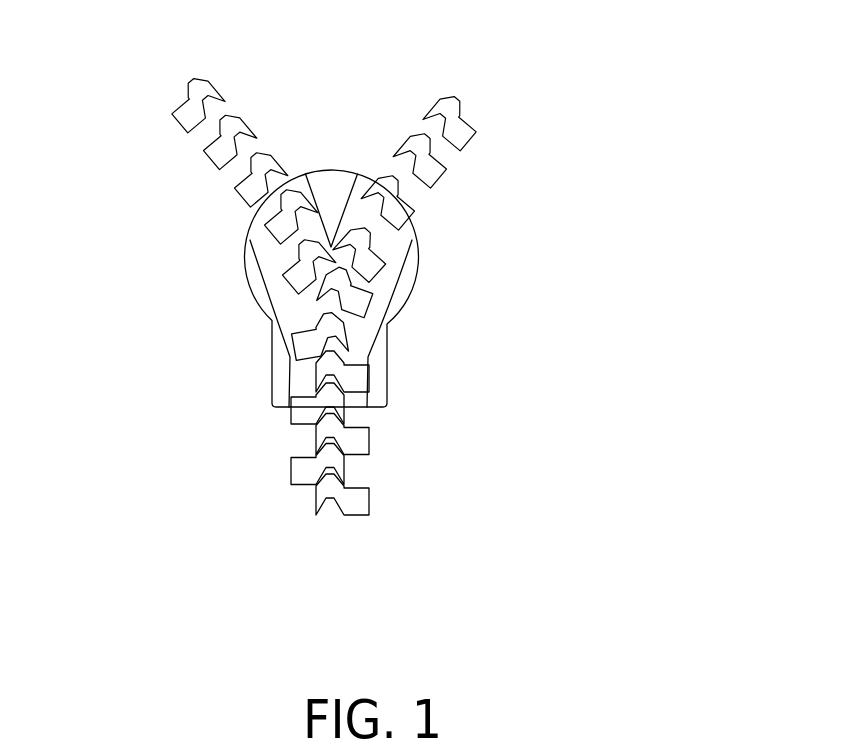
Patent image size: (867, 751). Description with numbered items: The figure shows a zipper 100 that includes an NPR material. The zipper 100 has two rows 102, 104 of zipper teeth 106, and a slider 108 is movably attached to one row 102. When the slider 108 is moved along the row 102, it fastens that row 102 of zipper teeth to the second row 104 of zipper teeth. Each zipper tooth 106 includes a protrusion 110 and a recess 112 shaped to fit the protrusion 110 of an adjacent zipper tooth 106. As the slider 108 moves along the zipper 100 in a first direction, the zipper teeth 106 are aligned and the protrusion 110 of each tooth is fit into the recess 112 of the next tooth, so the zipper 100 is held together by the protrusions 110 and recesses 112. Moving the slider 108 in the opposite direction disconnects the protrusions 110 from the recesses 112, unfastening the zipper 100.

The zipper 100 is at (597, 268).
The row of zipper teeth 102 is at (490, 100).
The second row of zipper teeth 104 is at (157, 75).
The zipper teeth 106 is at (173, 106).
The slider 108 is at (247, 290).
The protrusion 110 is at (453, 97).
The recess 112 is at (424, 120).